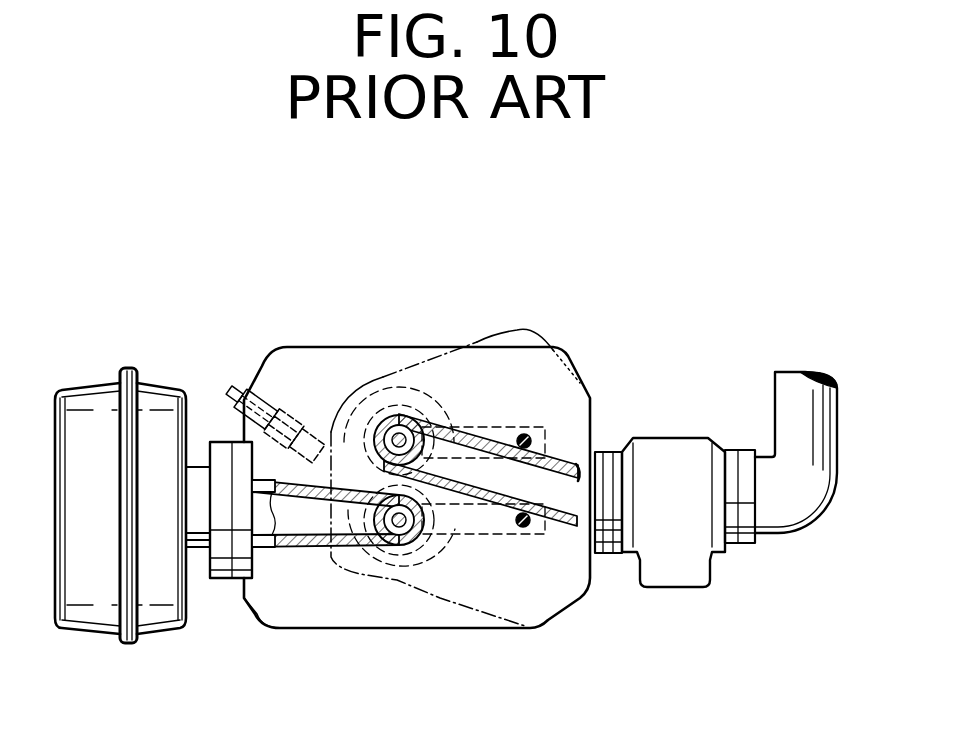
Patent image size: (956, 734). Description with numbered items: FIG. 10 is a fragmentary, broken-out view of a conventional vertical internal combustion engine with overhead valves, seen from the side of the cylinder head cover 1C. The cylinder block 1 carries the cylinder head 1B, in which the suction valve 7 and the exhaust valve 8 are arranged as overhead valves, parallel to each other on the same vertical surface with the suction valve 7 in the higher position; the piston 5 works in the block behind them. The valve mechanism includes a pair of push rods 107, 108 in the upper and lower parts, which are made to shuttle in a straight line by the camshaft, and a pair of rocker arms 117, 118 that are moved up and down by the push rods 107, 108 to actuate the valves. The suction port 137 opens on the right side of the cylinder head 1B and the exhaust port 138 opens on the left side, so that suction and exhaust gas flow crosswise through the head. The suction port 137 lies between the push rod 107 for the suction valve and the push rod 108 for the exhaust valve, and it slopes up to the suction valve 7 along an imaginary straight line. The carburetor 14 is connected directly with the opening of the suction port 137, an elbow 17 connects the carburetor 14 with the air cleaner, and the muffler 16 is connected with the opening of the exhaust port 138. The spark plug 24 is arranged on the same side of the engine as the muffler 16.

The cylinder block 1 is at (307, 338).
The cylinder head 1B is at (297, 612).
The cylinder head cover 1C is at (432, 604).
The piston 5 is at (382, 398).
The suction valve 7 is at (410, 418).
The exhaust valve 8 is at (388, 540).
The carburetor 14 is at (675, 573).
The muffler 16 is at (88, 385).
The elbow 17 is at (795, 500).
The spark plug 24 is at (258, 372).
The push rod for the suction valve 107 is at (528, 434).
The push rod for the exhaust valve 108 is at (523, 527).
The rocker arm 117 is at (508, 426).
The rocker arm 118 is at (497, 537).
The suction port 137 is at (555, 480).
The exhaust port 138 is at (292, 522).